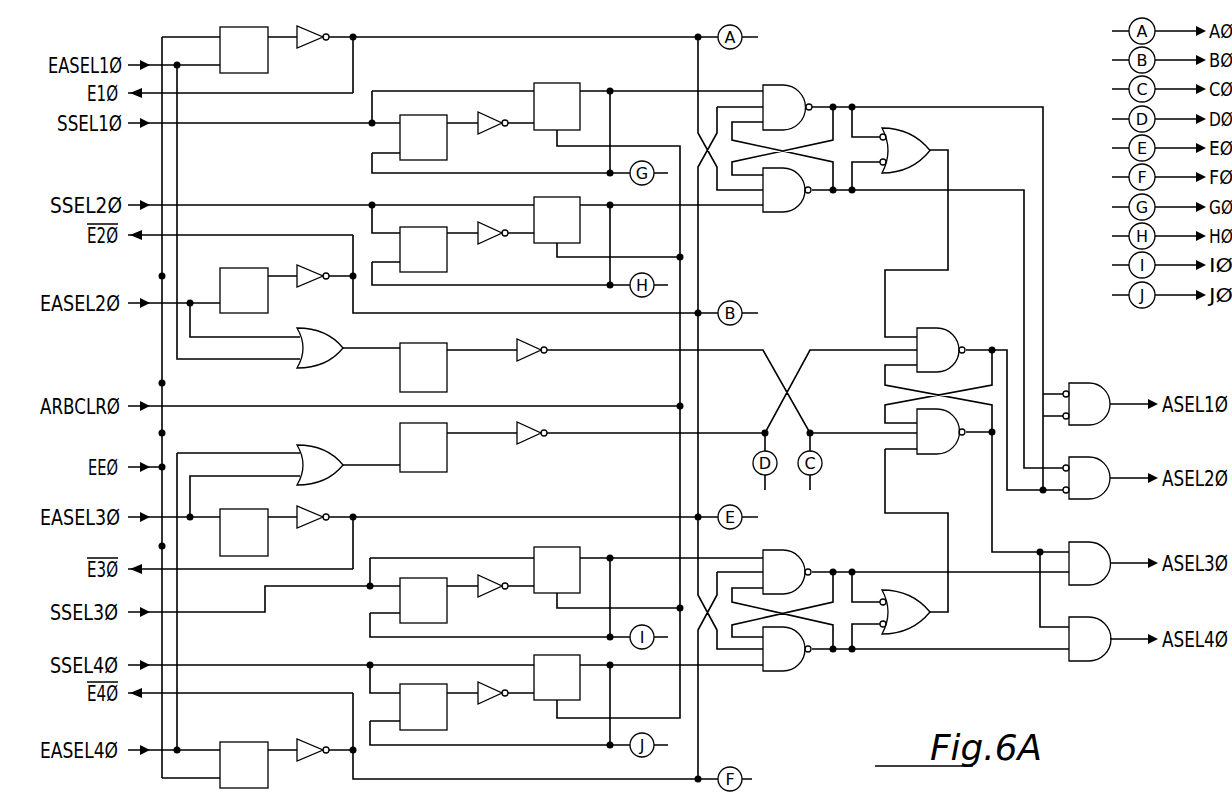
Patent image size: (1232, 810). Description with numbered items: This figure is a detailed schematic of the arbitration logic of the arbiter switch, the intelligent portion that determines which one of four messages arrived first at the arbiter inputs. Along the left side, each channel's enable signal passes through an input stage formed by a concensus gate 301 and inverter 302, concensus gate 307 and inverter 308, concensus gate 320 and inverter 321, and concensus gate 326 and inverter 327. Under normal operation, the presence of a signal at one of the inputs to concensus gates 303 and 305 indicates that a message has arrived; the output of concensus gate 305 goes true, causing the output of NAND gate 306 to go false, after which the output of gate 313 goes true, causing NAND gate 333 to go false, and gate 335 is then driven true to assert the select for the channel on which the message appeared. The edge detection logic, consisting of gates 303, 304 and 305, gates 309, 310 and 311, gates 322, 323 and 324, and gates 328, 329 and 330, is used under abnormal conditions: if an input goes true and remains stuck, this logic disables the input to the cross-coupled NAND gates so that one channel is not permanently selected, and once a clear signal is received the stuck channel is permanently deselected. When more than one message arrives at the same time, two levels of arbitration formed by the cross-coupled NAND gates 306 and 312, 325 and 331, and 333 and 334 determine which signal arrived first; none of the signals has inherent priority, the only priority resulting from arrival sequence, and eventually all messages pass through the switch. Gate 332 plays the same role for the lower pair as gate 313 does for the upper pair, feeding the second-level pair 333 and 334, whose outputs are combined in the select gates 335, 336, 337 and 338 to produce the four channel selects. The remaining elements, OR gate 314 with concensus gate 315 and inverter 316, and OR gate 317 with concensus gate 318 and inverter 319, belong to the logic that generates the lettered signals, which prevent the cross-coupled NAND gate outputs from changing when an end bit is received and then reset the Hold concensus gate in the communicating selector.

The concensus gate 301 is at (270, 57).
The inverter 302 is at (327, 36).
The concensus gate 303 is at (449, 142).
The inverter 304 is at (497, 133).
The concensus gate 305 is at (552, 83).
The NAND gate 306 is at (786, 90).
The concensus gate 307 is at (247, 268).
The inverter 308 is at (310, 284).
The concensus gate 309 is at (449, 253).
The inverter 310 is at (497, 246).
The concensus gate 311 is at (534, 197).
The NAND gate 312 is at (786, 209).
The NAND gate 313 is at (918, 137).
The OR gate 314 is at (336, 342).
The concensus gate 315 is at (448, 375).
The inverter 316 is at (543, 363).
The OR gate 317 is at (336, 476).
The concensus gate 318 is at (448, 462).
The inverter 319 is at (538, 453).
The concensus gate 320 is at (247, 508).
The inverter 321 is at (311, 527).
The concensus gate 322 is at (448, 612).
The inverter 323 is at (496, 596).
The concensus gate 324 is at (572, 552).
The NAND gate 325 is at (786, 552).
The concensus gate 326 is at (251, 742).
The inverter 327 is at (307, 760).
The concensus gate 328 is at (448, 721).
The inverter 329 is at (506, 712).
The concensus gate 330 is at (534, 655).
The NAND gate 331 is at (788, 670).
The NOR gate 332 is at (920, 620).
The NAND gate 333 is at (935, 328).
The NAND gate 334 is at (935, 452).
The NOR gate 335 is at (1088, 391).
The NOR gate 336 is at (1088, 459).
The NOR gate 337 is at (1088, 578).
The NOR gate 338 is at (1089, 655).